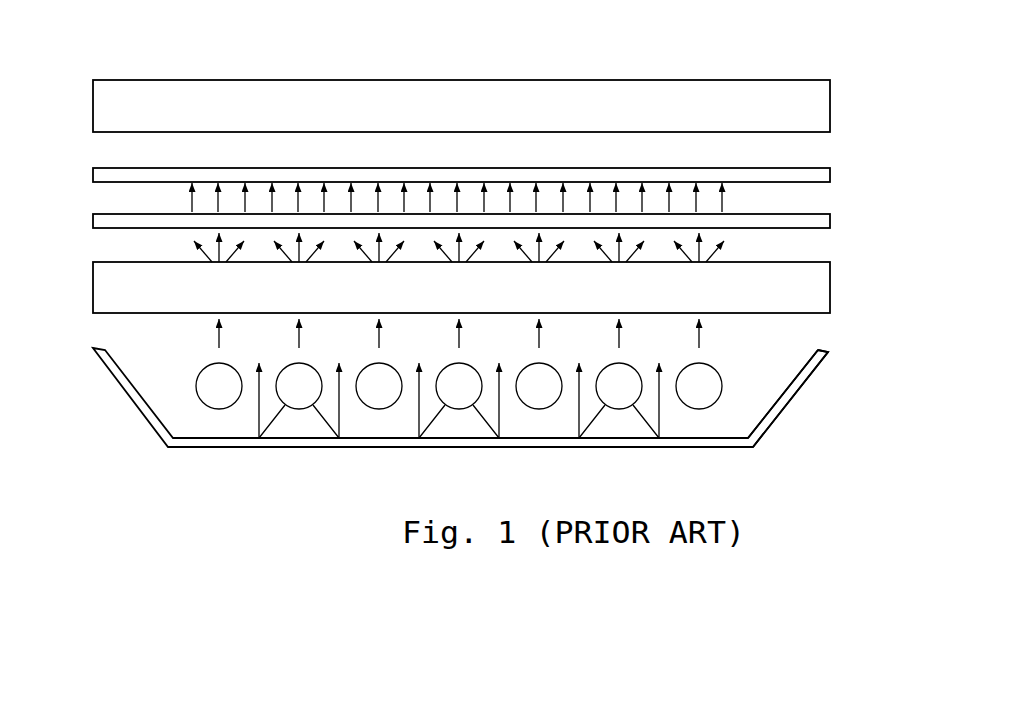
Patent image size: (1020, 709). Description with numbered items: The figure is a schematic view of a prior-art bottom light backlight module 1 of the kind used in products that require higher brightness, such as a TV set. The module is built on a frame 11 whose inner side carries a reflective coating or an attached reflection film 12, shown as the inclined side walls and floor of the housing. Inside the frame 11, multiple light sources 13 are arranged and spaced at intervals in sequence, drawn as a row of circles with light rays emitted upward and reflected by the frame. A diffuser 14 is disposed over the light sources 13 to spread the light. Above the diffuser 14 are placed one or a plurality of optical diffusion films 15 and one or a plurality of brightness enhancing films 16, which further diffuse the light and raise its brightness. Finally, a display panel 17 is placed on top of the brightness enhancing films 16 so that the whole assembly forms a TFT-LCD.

The bottom light backlight module 1 is at (82, 165).
The frame 11 is at (778, 412).
The reflection film 12 is at (796, 378).
The light sources 13 is at (620, 395).
The diffuser 14 is at (810, 287).
The optical diffusion films 15 is at (822, 221).
The brightness enhancing films 16 is at (822, 173).
The display panel 17 is at (675, 91).